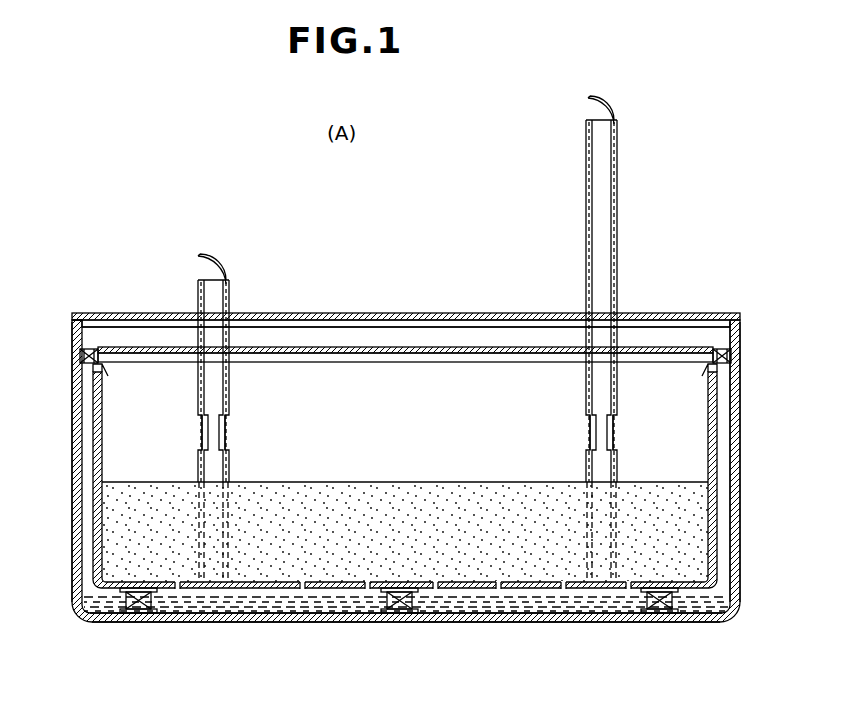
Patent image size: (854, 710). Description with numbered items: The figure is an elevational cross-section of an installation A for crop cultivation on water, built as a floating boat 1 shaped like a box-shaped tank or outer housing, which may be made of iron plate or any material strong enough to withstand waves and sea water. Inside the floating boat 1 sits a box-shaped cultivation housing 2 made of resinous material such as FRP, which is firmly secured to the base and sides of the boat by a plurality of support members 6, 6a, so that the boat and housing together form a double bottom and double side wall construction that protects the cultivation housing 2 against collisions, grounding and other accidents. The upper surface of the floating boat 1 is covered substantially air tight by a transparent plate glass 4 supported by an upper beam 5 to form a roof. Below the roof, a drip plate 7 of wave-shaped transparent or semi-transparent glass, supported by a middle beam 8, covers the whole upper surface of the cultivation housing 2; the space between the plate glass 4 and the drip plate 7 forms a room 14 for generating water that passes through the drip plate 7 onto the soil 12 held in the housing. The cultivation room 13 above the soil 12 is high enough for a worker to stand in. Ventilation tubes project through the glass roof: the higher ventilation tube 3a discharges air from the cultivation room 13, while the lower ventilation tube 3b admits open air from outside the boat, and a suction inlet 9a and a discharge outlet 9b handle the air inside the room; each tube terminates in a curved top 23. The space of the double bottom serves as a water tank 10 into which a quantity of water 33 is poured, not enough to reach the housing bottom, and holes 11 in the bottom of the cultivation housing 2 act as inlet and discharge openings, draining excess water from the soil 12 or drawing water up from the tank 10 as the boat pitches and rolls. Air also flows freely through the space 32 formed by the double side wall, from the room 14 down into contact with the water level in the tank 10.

The floating boat 1 is at (70, 467).
The cultivation housing 2 is at (97, 490).
The higher ventilation tube 3a is at (617, 172).
The lower ventilation tube 3b is at (229, 305).
The transparent plate glass 4 is at (465, 318).
The upper beam 5 is at (390, 325).
The support member 6 is at (130, 600).
The support member 6a is at (90, 347).
The drip plate 7 is at (293, 347).
The middle beam 8 is at (320, 360).
The suction inlet 9a is at (613, 430).
The discharge outlet 9b is at (226, 433).
The water tank 10 is at (540, 603).
The holes 11 is at (177, 590).
The soil 12 is at (500, 496).
The cultivation room 13 is at (497, 440).
The room for generating water 14 is at (525, 338).
The hook 23 is at (616, 110).
The space 32 is at (88, 432).
The water 33 is at (90, 598).
The installation A is at (435, 289).